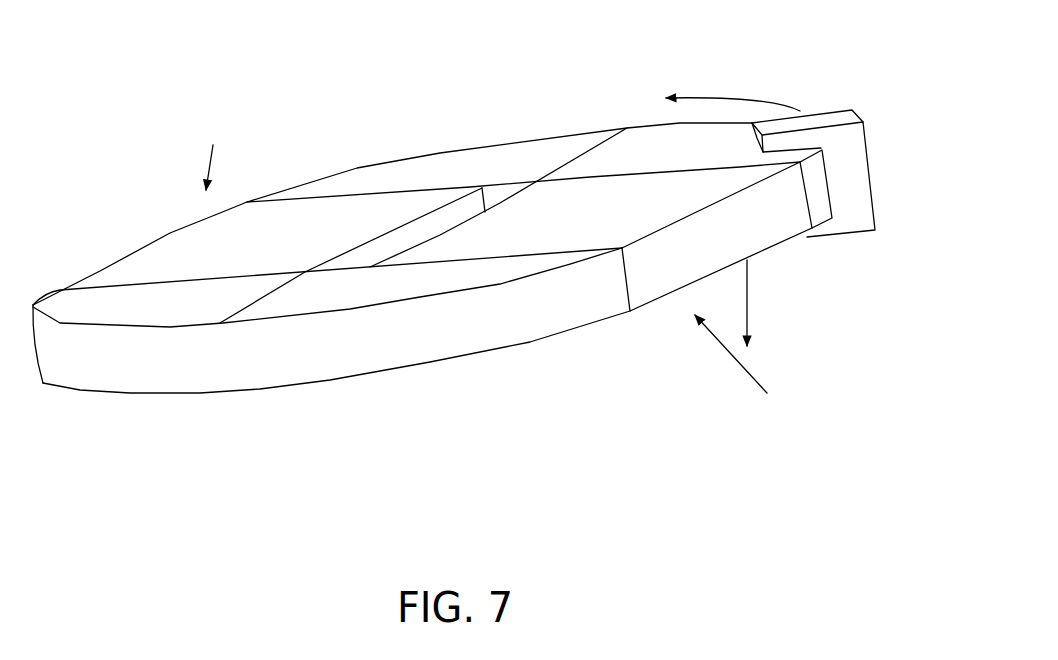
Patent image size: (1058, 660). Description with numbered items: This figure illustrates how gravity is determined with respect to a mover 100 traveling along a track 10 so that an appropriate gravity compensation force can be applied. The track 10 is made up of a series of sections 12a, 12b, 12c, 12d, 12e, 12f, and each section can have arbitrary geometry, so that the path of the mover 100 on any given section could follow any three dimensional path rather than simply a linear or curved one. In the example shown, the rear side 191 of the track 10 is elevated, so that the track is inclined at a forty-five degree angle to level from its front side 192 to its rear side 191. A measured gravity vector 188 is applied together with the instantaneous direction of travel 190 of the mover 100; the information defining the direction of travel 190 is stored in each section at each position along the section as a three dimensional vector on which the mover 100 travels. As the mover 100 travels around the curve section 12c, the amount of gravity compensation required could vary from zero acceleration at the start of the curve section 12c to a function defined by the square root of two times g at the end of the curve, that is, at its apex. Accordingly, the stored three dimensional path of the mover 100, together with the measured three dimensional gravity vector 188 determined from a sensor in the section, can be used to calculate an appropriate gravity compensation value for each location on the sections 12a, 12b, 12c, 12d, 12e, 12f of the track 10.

The track 10 is at (142, 87).
The section 12a is at (175, 257).
The section 12b is at (433, 173).
The curve section 12c is at (683, 157).
The section 12d is at (612, 222).
The section 12e is at (440, 285).
The section 12f is at (53, 307).
The mover 100 is at (858, 113).
The measured gravity vector 188 is at (748, 297).
The instantaneous direction of travel 190 is at (767, 98).
The rear side 191 is at (742, 370).
The front side 192 is at (223, 154).